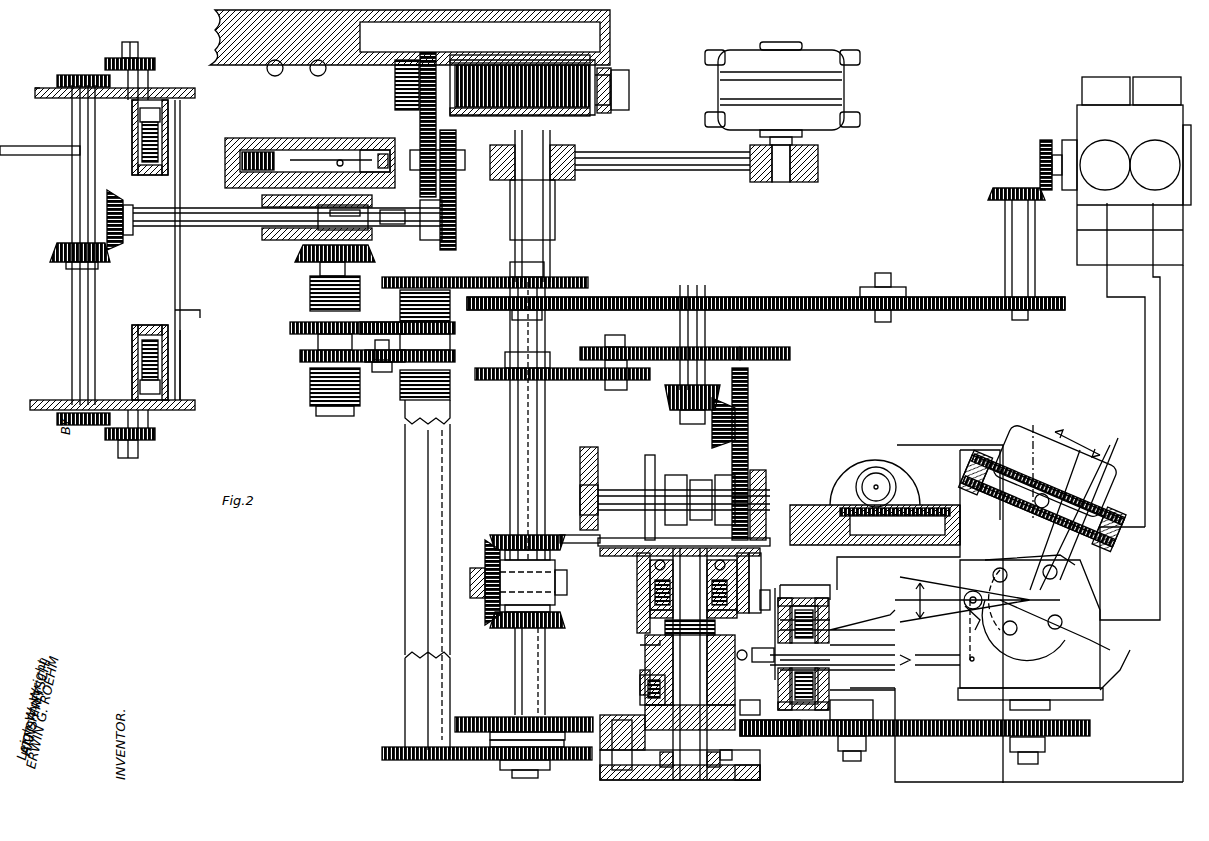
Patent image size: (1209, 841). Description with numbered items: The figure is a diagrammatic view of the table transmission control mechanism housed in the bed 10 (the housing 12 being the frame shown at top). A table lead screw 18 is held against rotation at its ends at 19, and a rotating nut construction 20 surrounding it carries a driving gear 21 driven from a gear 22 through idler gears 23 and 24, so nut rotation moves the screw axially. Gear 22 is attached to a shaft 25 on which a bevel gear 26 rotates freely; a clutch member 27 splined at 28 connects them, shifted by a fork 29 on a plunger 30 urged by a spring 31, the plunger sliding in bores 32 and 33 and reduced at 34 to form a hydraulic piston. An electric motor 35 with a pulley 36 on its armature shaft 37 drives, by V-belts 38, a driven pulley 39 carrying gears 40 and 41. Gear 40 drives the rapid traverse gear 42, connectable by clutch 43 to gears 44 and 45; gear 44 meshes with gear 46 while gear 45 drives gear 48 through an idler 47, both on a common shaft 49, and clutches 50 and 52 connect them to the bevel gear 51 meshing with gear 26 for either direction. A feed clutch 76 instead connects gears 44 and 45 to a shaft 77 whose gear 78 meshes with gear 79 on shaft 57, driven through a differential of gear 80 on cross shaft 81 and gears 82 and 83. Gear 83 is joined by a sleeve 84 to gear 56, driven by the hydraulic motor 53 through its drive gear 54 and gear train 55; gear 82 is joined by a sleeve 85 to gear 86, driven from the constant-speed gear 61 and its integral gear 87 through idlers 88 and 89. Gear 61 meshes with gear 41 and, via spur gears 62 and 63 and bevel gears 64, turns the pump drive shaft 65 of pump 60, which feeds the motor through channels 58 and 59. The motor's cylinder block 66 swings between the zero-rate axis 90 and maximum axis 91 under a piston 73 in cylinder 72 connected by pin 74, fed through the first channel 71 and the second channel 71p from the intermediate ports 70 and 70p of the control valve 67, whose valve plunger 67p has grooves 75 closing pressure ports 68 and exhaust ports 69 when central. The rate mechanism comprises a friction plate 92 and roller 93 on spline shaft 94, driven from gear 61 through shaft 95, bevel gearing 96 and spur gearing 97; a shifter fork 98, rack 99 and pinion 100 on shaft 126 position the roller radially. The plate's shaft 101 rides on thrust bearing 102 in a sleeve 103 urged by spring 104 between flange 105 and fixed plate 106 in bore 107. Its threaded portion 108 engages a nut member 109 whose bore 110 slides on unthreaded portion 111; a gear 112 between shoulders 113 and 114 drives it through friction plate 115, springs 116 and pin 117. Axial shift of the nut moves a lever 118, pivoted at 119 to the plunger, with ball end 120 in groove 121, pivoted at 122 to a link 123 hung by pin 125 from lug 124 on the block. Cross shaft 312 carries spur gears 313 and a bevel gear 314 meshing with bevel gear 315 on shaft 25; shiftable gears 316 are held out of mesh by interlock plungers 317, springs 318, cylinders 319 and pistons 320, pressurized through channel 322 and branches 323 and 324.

The bed 10 is at (50, 88).
The housing 12 is at (610, 15).
The table lead screw 18 is at (612, 112).
The screw end supports 19 is at (612, 58).
The rotating nut construction 20 is at (555, 125).
The driving gear 21 is at (412, 50).
The gear 22 is at (448, 245).
The intermediate idler gear 23 is at (456, 142).
The intermediate idler gear 24 is at (420, 122).
The shaft 25 is at (405, 235).
The bevel gear 26 is at (295, 260).
The shiftable clutch member 27 is at (365, 213).
The spline 28 is at (360, 235).
The shifter fork 29 is at (312, 146).
The slidable plunger 30 is at (290, 158).
The spring 31 is at (246, 150).
The bore 32 is at (235, 188).
The bore 33 is at (362, 150).
The reduced portion 34 is at (380, 152).
The electric motor 35 is at (830, 90).
The multiple groove pulley 36 is at (755, 183).
The armature shaft 37 is at (785, 183).
The multiple V-belts 38 is at (650, 172).
The driven pulley 39 is at (500, 180).
The gear 40 is at (565, 277).
The gear 41 is at (484, 310).
The rapid traverse drive gear 42 is at (385, 277).
The rapid traverse selector clutch 43 is at (400, 306).
The gear 44 is at (455, 330).
The gear 45 is at (455, 356).
The gear 46 is at (290, 328).
The intermediate idler 47 is at (378, 372).
The gear 48 is at (310, 388).
The common shaft 49 is at (300, 356).
The clutch means 50 is at (310, 294).
The beveled gear 51 is at (320, 272).
The clutch means 52 is at (320, 416).
The hydraulic motor 53 is at (1100, 680).
The drive gear 54 is at (1090, 728).
The gear train 55 is at (775, 736).
The gear 56 is at (475, 718).
The supporting shaft 57 is at (485, 600).
The channel 58 is at (1140, 368).
The channel 59 is at (1120, 655).
The hydraulic pump 60 is at (1090, 118).
The gear 61 is at (725, 297).
The spur gear 62 is at (900, 310).
The spur gear 63 is at (1050, 310).
The bevel gears 64 is at (1032, 188).
The pump drive shaft 65 is at (1050, 140).
The cylinder block 66 is at (1028, 455).
The displacement control valve 67 is at (830, 740).
The valve plunger 67p is at (873, 705).
The pressure ports 68 is at (830, 630).
The exhaust ports 69 is at (775, 600).
The intermediate port 70 is at (830, 690).
The intermediate port 70p is at (822, 630).
The channel 71 is at (1010, 614).
The channel 71p is at (905, 562).
The fixed cylinder 72 is at (1044, 500).
The piston 73 is at (1078, 570).
The pin 74 is at (1070, 510).
The annular grooves 75 is at (765, 712).
The feed clutch 76 is at (450, 390).
The shaft 77 is at (405, 530).
The gear 78 is at (382, 755).
The gear 79 is at (560, 750).
The gear 80 is at (490, 620).
The cross shaft 81 is at (488, 550).
The differential gear 82 is at (495, 537).
The differential gear 83 is at (510, 650).
The sleeve 84 is at (515, 684).
The sleeve 85 is at (545, 432).
The gear 86 is at (552, 368).
The gear 87 is at (742, 352).
The intermediate idler gear 88 is at (600, 347).
The intermediate idler gear 89 is at (625, 390).
The axis 90 is at (1108, 466).
The axis 91 is at (1040, 440).
The friction plate 92 is at (598, 543).
The friction roller 93 is at (635, 470).
The spline shaft 94 is at (712, 430).
The shaft 95 is at (705, 385).
The bevel gearing 96 is at (690, 412).
The spur gearing 97 is at (748, 450).
The shifter fork 98 is at (645, 535).
The rack 99 is at (835, 512).
The pinion 100 is at (878, 467).
The shaft 101 is at (650, 606).
The anti-friction thrust bearing 102 is at (637, 578).
The slidable sleeve 103 is at (673, 592).
The spring 104 is at (655, 619).
The internal annular flange 105 is at (745, 580).
The fixed plate 106 is at (665, 635).
The bore 107 is at (650, 618).
The threaded portion 108 is at (650, 645).
The nut member 109 is at (640, 650).
The bore 110 is at (720, 744).
The unthreaded portion 111 is at (720, 760).
The gear 112 is at (645, 710).
The shoulder 113 is at (660, 748).
The shoulder 114 is at (640, 683).
The friction plate 115 is at (645, 685).
The springs 116 is at (648, 695).
The pin 117 is at (750, 752).
The lever 118 is at (928, 665).
The pivot 119 is at (840, 650).
The ball-shaped end 120 is at (745, 652).
The groove 121 is at (762, 660).
The pivot 122 is at (972, 660).
The link 123 is at (975, 655).
The lug 124 is at (975, 590).
The pin 125 is at (963, 612).
The shaft 126 is at (880, 486).
The shaft 312 is at (72, 142).
The spur gear 313 is at (70, 75).
The bevel gear 314 is at (105, 262).
The bevel gear 315 is at (110, 192).
The spur gear 316 is at (155, 62).
The interlock plunger 317 is at (150, 80).
The spring 318 is at (142, 136).
The cylinder 319 is at (168, 135).
The piston portion 320 is at (140, 119).
The channel 322 is at (195, 310).
The branch connection 323 is at (180, 339).
The branch connection 324 is at (180, 252).